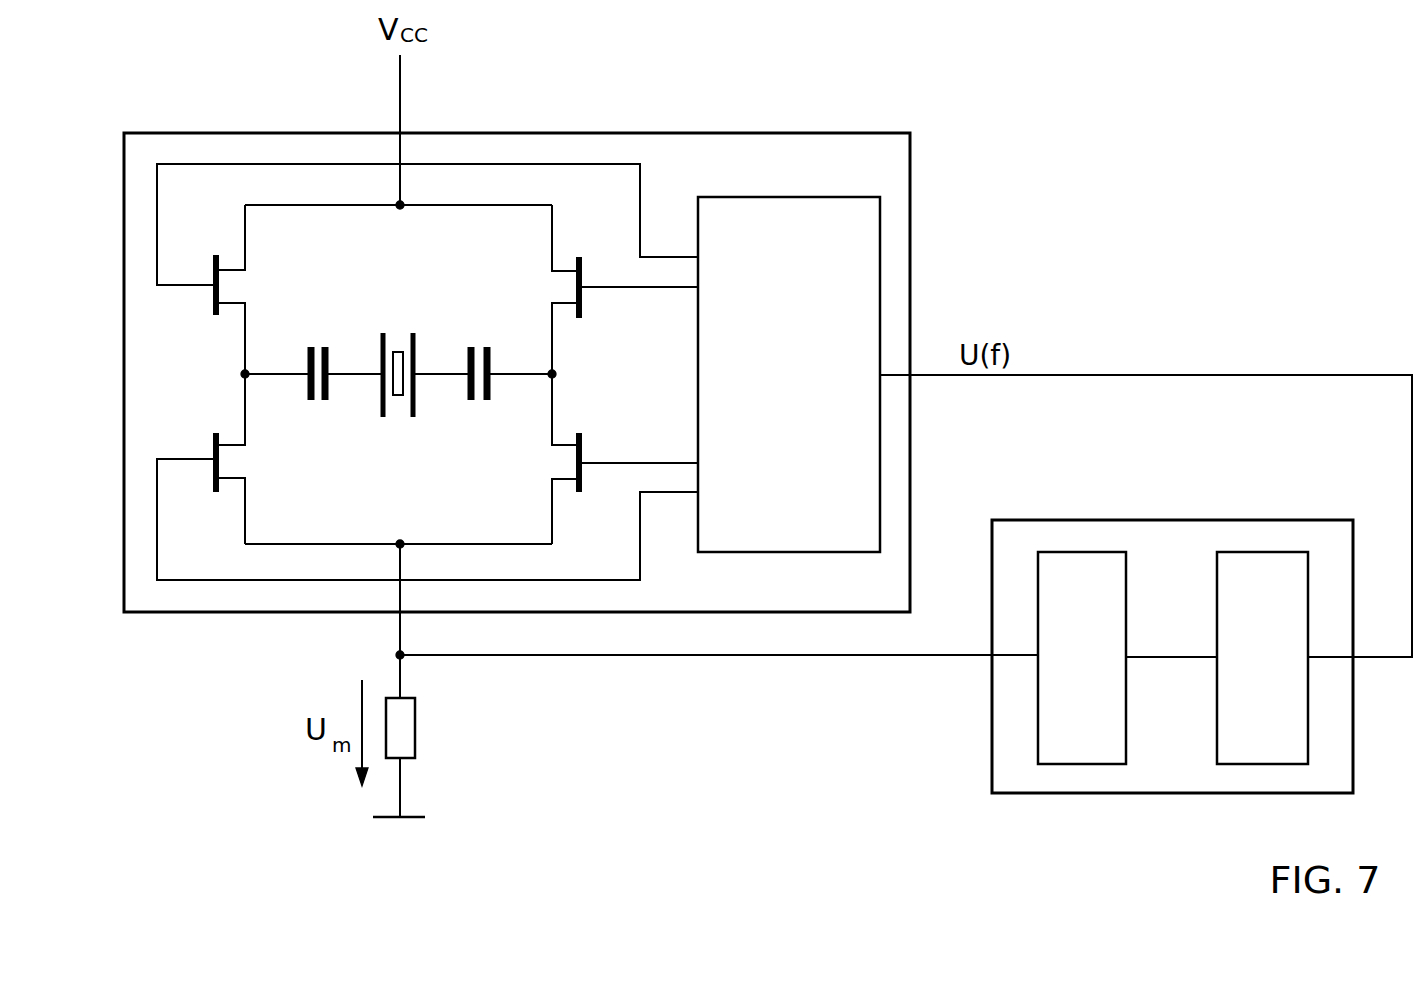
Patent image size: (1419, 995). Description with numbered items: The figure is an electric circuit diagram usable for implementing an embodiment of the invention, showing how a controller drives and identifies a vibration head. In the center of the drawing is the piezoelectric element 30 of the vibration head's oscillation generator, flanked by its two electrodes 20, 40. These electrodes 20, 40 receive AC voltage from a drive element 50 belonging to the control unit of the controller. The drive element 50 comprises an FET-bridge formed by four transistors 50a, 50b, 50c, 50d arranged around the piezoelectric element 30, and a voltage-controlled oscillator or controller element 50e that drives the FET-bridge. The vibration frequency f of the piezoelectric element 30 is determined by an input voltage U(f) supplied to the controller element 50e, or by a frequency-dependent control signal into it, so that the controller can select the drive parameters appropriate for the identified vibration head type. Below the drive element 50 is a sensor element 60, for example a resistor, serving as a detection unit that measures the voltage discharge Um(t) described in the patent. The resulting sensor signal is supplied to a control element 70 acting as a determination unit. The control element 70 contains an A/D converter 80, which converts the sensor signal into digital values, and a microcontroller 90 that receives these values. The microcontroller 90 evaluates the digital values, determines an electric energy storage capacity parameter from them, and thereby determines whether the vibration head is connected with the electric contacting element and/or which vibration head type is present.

The electrode 20 is at (380, 343).
The piezoelectric element 30 is at (400, 396).
The electrode 40 is at (418, 343).
The drive element 50 is at (848, 133).
The FET-bridge transistor 50a is at (212, 262).
The FET-bridge transistor 50b is at (586, 272).
The FET-bridge transistor 50c is at (211, 477).
The FET-bridge transistor 50d is at (585, 477).
The controller element 50e is at (712, 347).
The sensor element 60 is at (415, 724).
The control element 70 is at (992, 722).
The A/D converter 80 is at (1115, 552).
The microcontroller 90 is at (1275, 552).